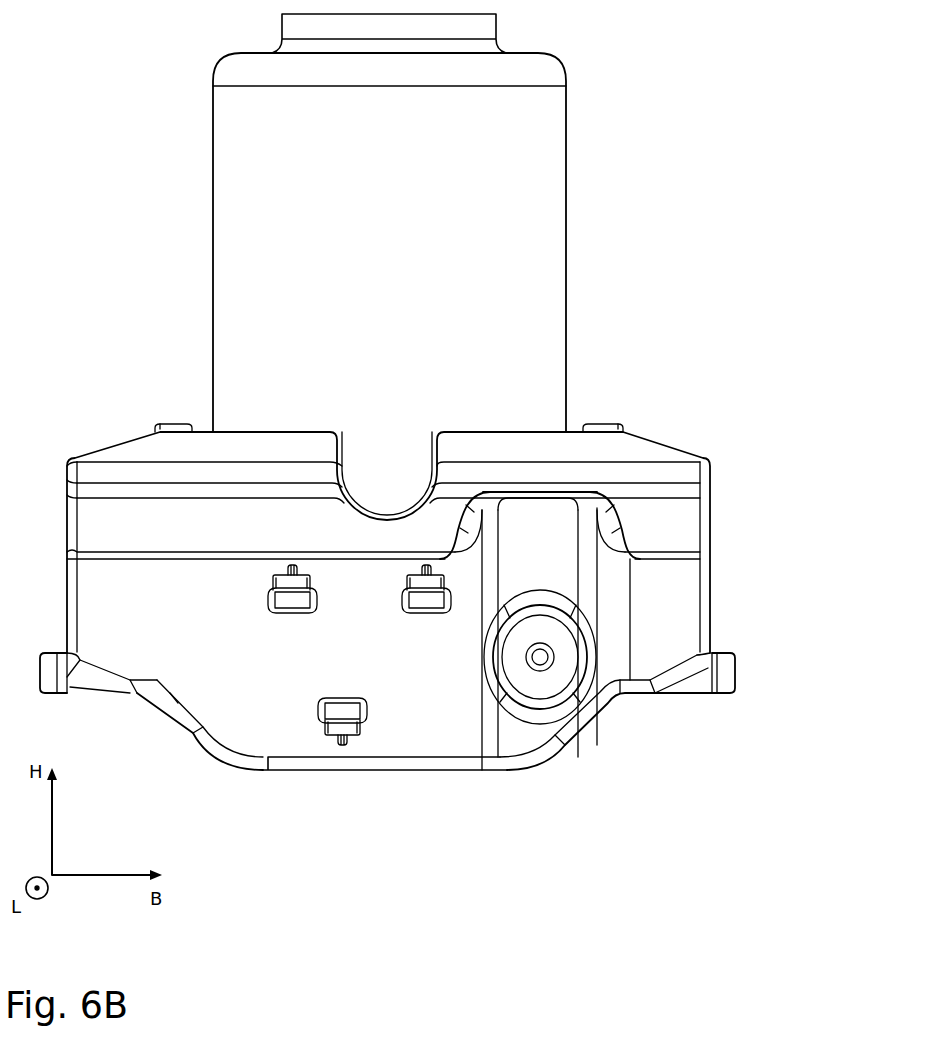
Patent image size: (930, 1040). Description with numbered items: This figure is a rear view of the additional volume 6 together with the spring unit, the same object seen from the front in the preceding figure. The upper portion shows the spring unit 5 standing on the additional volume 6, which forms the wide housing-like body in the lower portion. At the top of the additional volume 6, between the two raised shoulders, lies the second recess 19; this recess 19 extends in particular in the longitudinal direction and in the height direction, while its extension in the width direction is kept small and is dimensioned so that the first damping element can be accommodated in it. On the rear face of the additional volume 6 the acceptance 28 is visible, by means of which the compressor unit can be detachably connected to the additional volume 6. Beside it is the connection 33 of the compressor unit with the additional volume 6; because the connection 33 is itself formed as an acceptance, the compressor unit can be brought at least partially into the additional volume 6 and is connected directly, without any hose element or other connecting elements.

The cylinder (pressure vessel / motor housing) 5 is at (542, 163).
The additional volume 6 is at (387, 534).
The second recess 19 is at (400, 430).
The acceptance 28 is at (352, 714).
The connection 33 is at (562, 680).